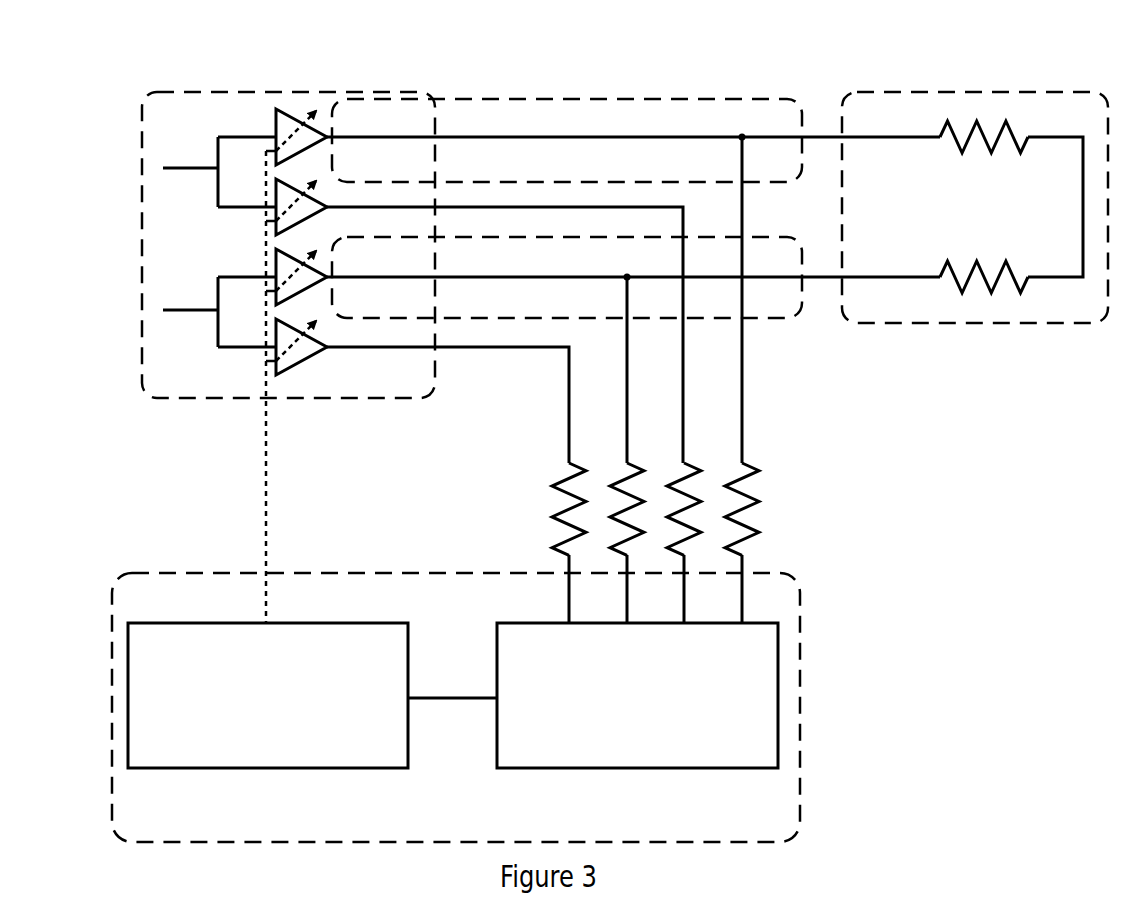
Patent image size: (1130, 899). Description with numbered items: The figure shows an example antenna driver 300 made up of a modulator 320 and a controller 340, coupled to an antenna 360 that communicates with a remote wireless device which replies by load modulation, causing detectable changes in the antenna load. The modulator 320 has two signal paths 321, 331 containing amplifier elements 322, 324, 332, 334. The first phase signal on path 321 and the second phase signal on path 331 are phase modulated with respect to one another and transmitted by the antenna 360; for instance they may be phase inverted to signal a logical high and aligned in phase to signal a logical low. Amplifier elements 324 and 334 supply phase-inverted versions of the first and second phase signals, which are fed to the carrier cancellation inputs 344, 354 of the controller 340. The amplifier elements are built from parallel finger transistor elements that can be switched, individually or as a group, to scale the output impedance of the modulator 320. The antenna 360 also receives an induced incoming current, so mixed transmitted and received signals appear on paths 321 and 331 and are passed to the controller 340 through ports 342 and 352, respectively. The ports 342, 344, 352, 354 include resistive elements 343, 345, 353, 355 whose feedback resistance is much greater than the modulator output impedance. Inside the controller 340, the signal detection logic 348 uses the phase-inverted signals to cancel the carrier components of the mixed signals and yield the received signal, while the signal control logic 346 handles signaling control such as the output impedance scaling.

The antenna driver 300 is at (62, 58).
The modulator 320 is at (161, 92).
The signal path 321 is at (519, 98).
The amplifier element 322 is at (276, 118).
The amplifier element 324 is at (276, 190).
The signal path 331 is at (496, 322).
The amplifier element 332 is at (276, 263).
The amplifier element 334 is at (276, 326).
The controller 340 is at (174, 572).
The port 342 is at (742, 613).
The resistive element 343 is at (741, 466).
The carrier cancellation input 344 is at (684, 613).
The resistive element 345 is at (684, 466).
The signal control logic 346 is at (174, 622).
The signal detection logic 348 is at (528, 622).
The port 352 is at (627, 613).
The resistive element 353 is at (627, 466).
The carrier cancellation input 354 is at (569, 613).
The resistive element 355 is at (569, 466).
The antenna 360 is at (878, 90).